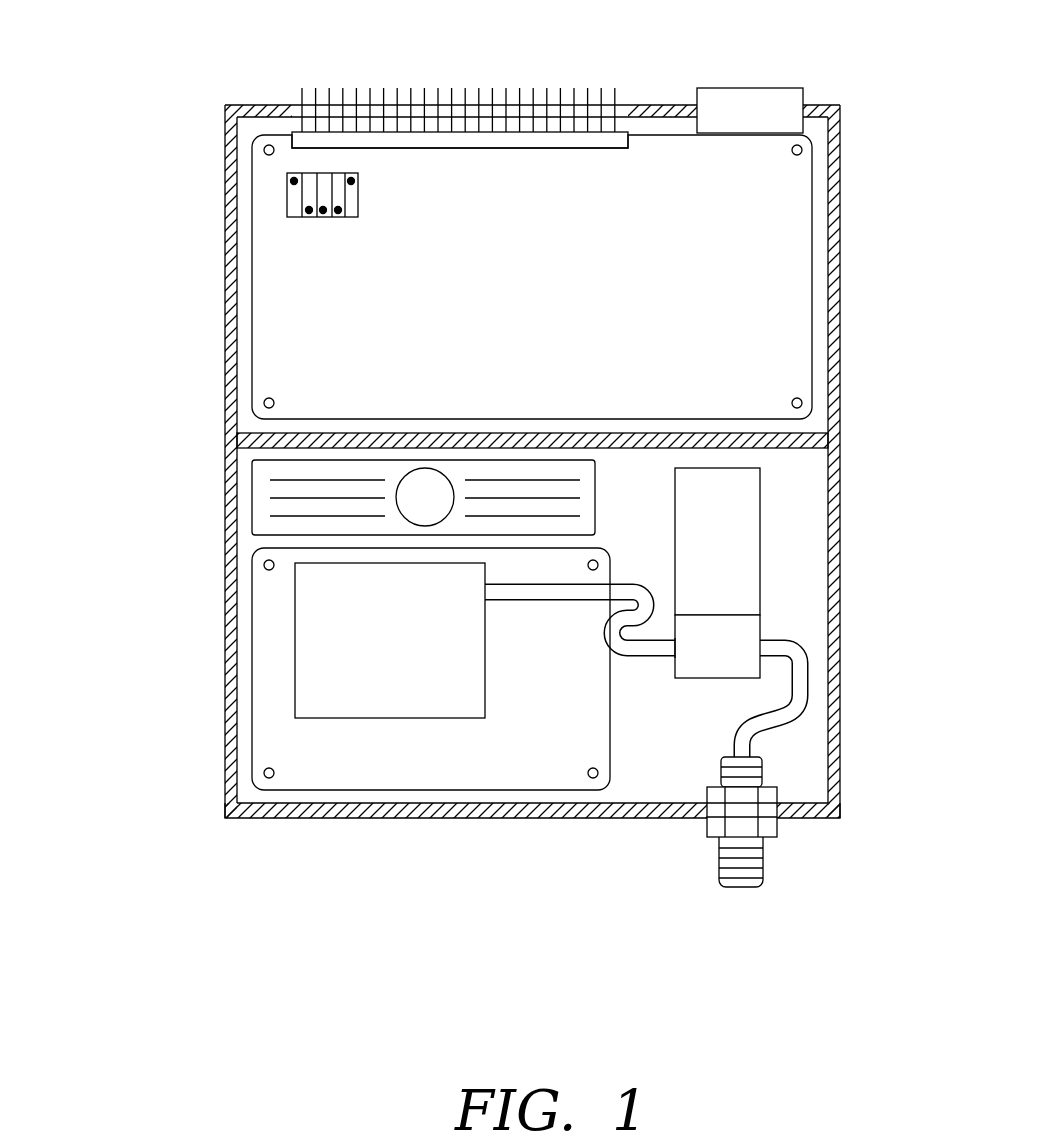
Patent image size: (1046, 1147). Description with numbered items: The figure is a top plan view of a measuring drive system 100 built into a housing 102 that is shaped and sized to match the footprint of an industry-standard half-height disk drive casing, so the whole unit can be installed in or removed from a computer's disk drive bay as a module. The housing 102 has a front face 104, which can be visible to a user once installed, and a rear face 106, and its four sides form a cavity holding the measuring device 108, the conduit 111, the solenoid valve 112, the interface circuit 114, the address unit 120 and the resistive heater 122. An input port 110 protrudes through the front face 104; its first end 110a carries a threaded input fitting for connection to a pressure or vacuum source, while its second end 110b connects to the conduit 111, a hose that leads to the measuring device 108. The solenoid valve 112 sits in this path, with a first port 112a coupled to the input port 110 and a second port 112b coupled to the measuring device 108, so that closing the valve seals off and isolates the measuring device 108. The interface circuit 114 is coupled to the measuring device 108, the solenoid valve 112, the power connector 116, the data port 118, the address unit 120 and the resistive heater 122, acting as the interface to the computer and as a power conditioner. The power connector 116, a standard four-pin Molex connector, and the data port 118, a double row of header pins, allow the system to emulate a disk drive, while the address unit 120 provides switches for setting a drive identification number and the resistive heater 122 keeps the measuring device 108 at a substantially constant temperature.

The measuring drive system 100 is at (108, 157).
The housing 102 is at (221, 613).
The front face 104 is at (301, 831).
The rear face 106 is at (262, 89).
The measuring device 108 is at (392, 681).
The input port 110 is at (791, 853).
The first end 110a is at (732, 894).
The second end 110b is at (776, 768).
The conduit 111 is at (597, 630).
The solenoid valve 112 is at (751, 526).
The first port 112a is at (762, 638).
The second port 112b is at (672, 656).
The interface circuit 114 is at (758, 312).
The power connector 116 is at (764, 56).
The data port 118 is at (419, 56).
The address unit 120 is at (379, 206).
The resistive heater 122 is at (253, 497).